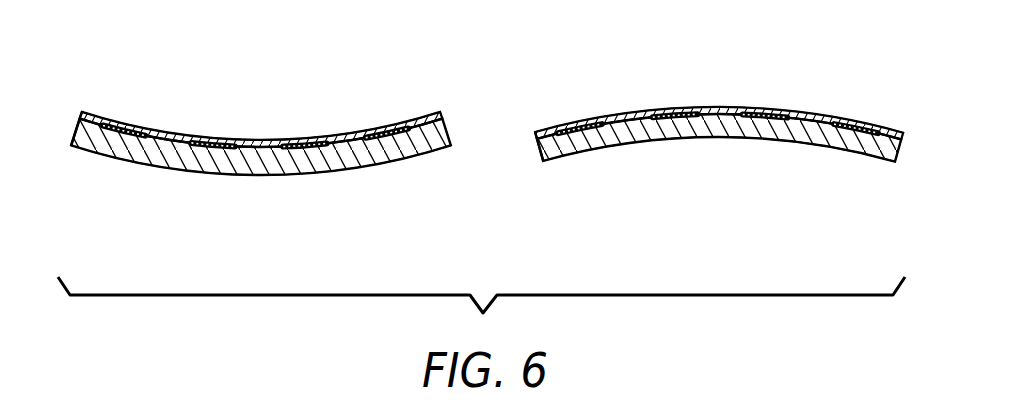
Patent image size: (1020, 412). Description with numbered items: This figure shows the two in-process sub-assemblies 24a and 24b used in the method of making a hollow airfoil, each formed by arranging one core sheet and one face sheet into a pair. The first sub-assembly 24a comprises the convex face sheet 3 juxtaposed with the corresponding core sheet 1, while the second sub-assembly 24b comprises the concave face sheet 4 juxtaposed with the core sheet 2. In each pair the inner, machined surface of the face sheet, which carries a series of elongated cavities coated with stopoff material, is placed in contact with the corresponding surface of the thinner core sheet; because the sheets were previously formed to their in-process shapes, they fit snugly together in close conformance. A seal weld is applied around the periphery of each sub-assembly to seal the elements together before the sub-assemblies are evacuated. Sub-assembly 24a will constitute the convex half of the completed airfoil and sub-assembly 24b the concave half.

The core sheet 1 is at (331, 132).
The core sheet 2 is at (808, 110).
The face sheet 3 is at (320, 168).
The face sheet 4 is at (820, 136).
The in-process sub-assembly 24a is at (250, 119).
The in-process sub-assembly 24b is at (714, 118).